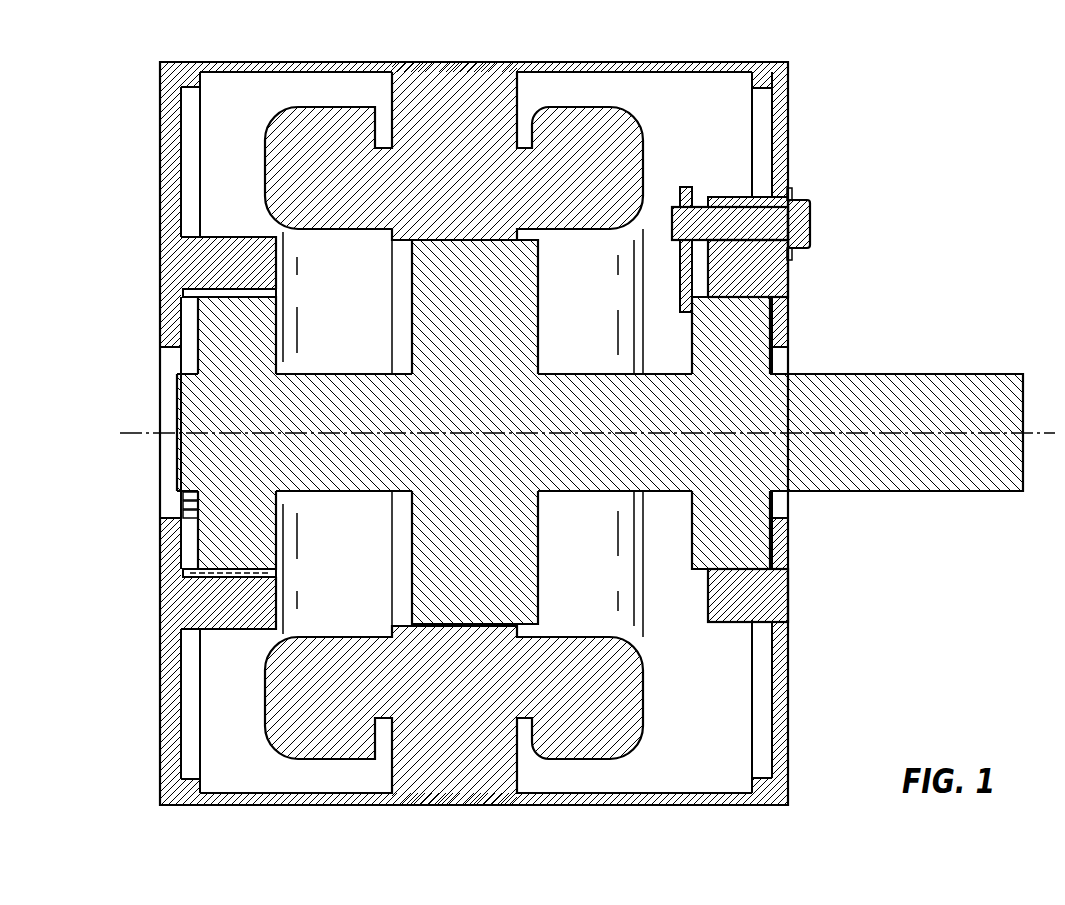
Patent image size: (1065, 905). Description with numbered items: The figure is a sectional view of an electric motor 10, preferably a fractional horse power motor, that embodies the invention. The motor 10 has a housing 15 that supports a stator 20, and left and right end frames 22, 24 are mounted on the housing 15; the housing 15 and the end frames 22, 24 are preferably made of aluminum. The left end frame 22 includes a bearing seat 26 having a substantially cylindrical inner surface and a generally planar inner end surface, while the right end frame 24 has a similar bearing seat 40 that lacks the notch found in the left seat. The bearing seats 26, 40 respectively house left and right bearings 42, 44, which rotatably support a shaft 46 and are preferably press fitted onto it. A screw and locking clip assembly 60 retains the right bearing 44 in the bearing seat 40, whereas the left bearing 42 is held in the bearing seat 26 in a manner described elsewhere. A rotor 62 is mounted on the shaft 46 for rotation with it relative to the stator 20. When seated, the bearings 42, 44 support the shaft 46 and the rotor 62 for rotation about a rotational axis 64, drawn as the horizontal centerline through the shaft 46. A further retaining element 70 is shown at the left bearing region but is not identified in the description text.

The electric motor 10 is at (870, 68).
The housing 15 is at (640, 60).
The stator 20 is at (327, 122).
The left end frame 22 is at (161, 208).
The right end frame 24 is at (788, 140).
The bearing seat 26 is at (200, 603).
The bearing seat 40 is at (745, 592).
The left bearing 42 is at (230, 548).
The right bearing 44 is at (747, 540).
The shaft 46 is at (988, 483).
The screw and locking clip assembly 60 is at (819, 211).
The rotor 62 is at (513, 587).
The rotational axis 64 is at (135, 436).
The bearing retainer plate 70 is at (197, 305).